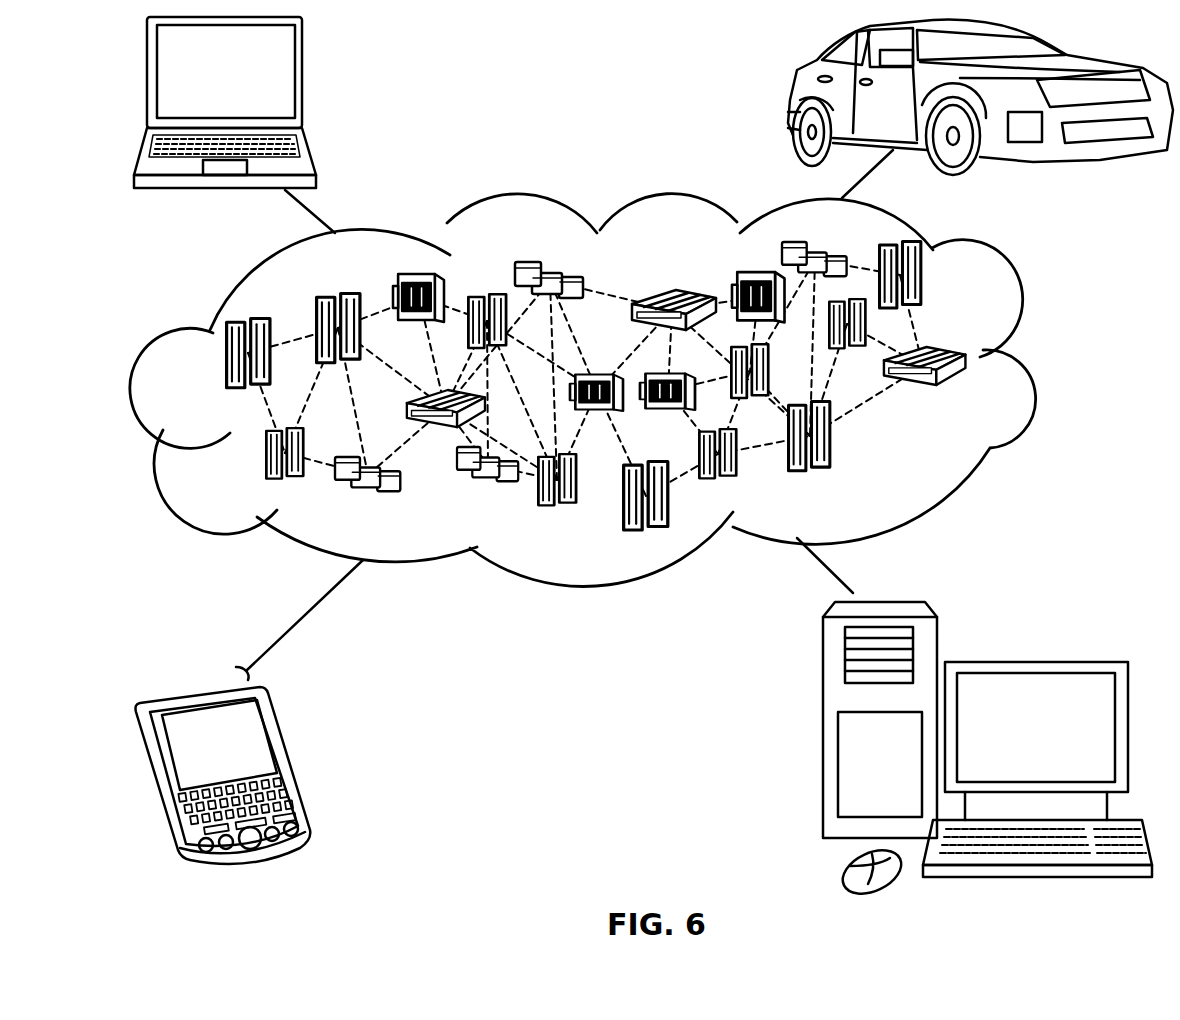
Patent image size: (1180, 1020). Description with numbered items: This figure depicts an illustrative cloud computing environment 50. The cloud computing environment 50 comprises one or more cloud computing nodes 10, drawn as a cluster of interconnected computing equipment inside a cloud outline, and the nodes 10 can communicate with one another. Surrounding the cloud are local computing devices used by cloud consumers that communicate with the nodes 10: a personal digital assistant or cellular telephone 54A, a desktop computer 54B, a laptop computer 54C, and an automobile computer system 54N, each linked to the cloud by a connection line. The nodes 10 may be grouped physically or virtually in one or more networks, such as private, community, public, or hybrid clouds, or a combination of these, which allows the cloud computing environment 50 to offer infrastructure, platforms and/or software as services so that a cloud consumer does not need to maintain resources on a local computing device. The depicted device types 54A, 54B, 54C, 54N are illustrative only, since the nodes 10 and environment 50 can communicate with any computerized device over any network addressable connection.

The cloud computing node 10 is at (978, 396).
The cloud computing environment 50 is at (1035, 363).
The personal digital assistant (PDA) or cellular telephone 54A is at (290, 757).
The desktop computer 54B is at (1037, 662).
The laptop computer 54C is at (302, 80).
The automobile computer system 54N is at (790, 97).